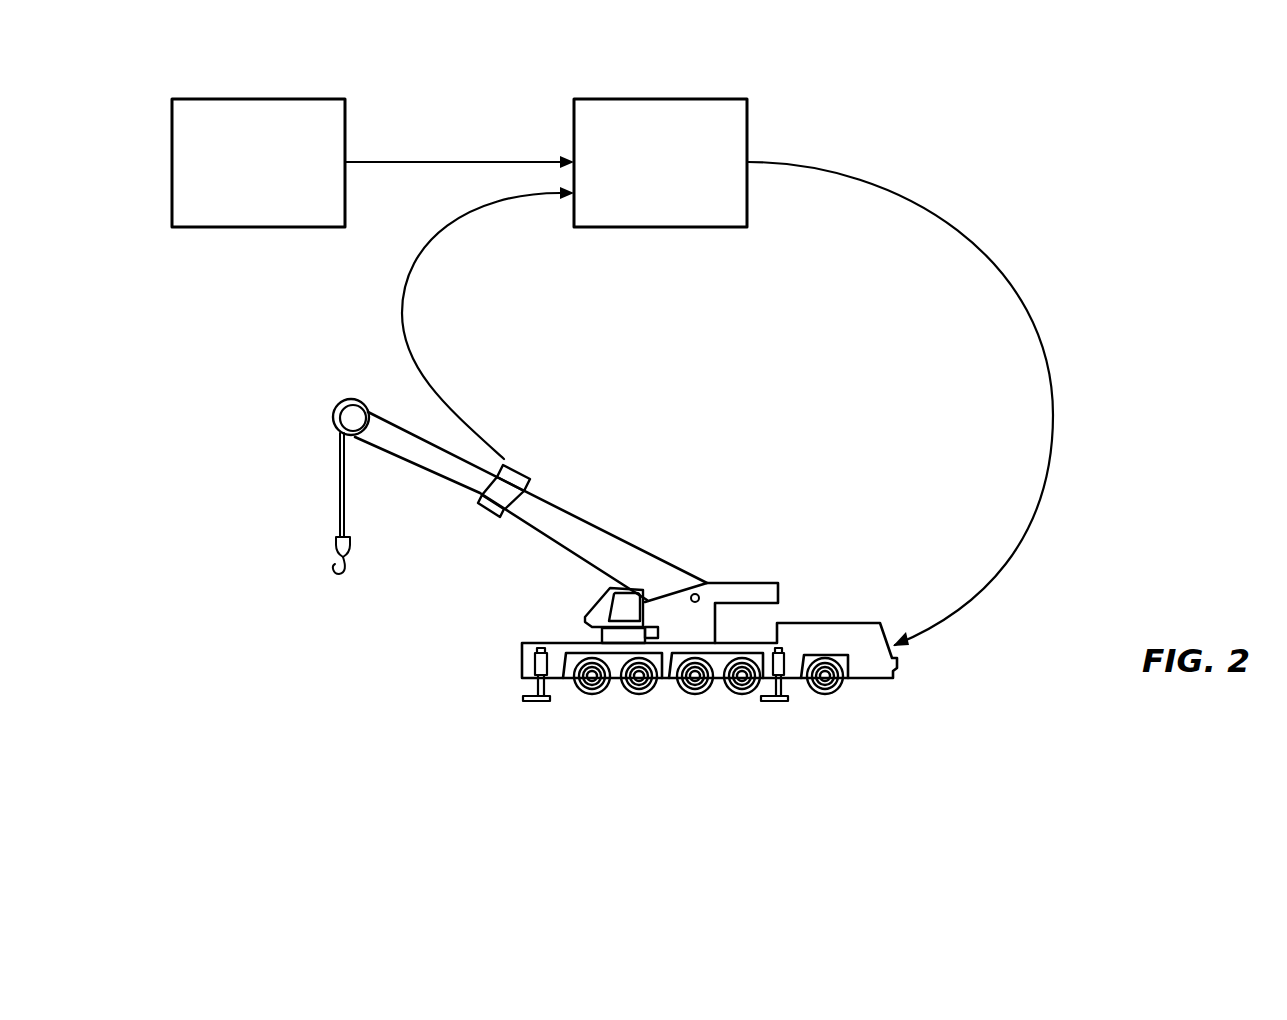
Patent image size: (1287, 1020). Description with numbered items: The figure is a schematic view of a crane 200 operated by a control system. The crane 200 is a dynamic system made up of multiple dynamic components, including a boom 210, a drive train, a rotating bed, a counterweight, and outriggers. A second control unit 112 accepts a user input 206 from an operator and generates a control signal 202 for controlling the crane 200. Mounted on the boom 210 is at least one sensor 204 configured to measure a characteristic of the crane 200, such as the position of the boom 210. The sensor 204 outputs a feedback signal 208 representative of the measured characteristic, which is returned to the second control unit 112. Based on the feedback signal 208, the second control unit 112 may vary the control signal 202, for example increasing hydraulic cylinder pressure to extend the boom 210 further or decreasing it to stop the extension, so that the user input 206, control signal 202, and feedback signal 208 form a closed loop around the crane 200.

The second control unit 112 is at (660, 170).
The crane 200 is at (783, 720).
The control signal 202 is at (1037, 332).
The sensor 204 is at (514, 473).
The user input 206 is at (280, 194).
The feedback signal 208 is at (403, 308).
The boom 210 is at (483, 505).